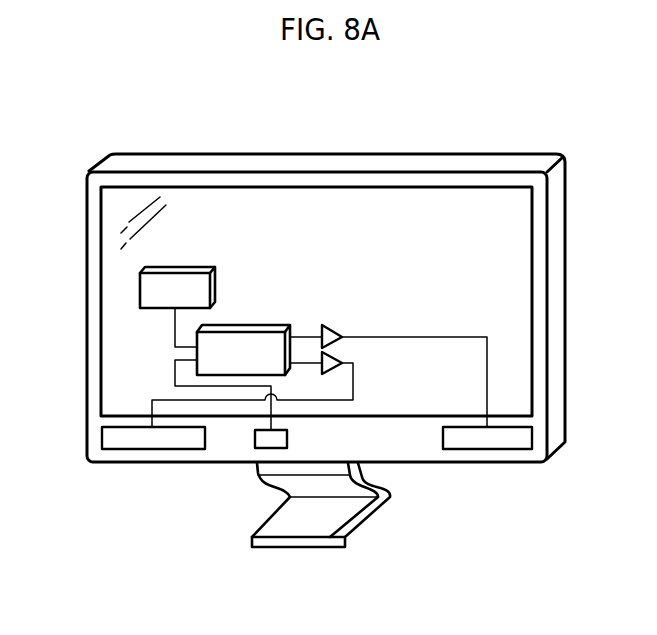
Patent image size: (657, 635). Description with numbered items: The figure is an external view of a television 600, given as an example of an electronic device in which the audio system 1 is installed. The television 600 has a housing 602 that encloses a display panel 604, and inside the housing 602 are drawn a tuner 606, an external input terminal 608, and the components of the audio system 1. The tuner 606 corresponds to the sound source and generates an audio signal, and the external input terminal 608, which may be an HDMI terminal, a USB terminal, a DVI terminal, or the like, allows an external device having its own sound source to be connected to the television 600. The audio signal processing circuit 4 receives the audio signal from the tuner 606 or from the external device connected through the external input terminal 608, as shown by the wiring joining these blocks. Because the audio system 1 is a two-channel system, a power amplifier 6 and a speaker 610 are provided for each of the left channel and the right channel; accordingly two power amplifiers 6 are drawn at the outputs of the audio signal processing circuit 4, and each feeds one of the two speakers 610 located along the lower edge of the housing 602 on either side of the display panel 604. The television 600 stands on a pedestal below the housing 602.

The audio system 1 is at (387, 285).
The audio signal processing circuit 4 is at (255, 330).
The power amplifier 6 is at (328, 332).
The television 600 is at (357, 608).
The housing 602 is at (540, 152).
The display panel 604 is at (318, 208).
The tuner 606 is at (198, 270).
The external input terminal 608 is at (260, 437).
The speaker 610 is at (120, 440).